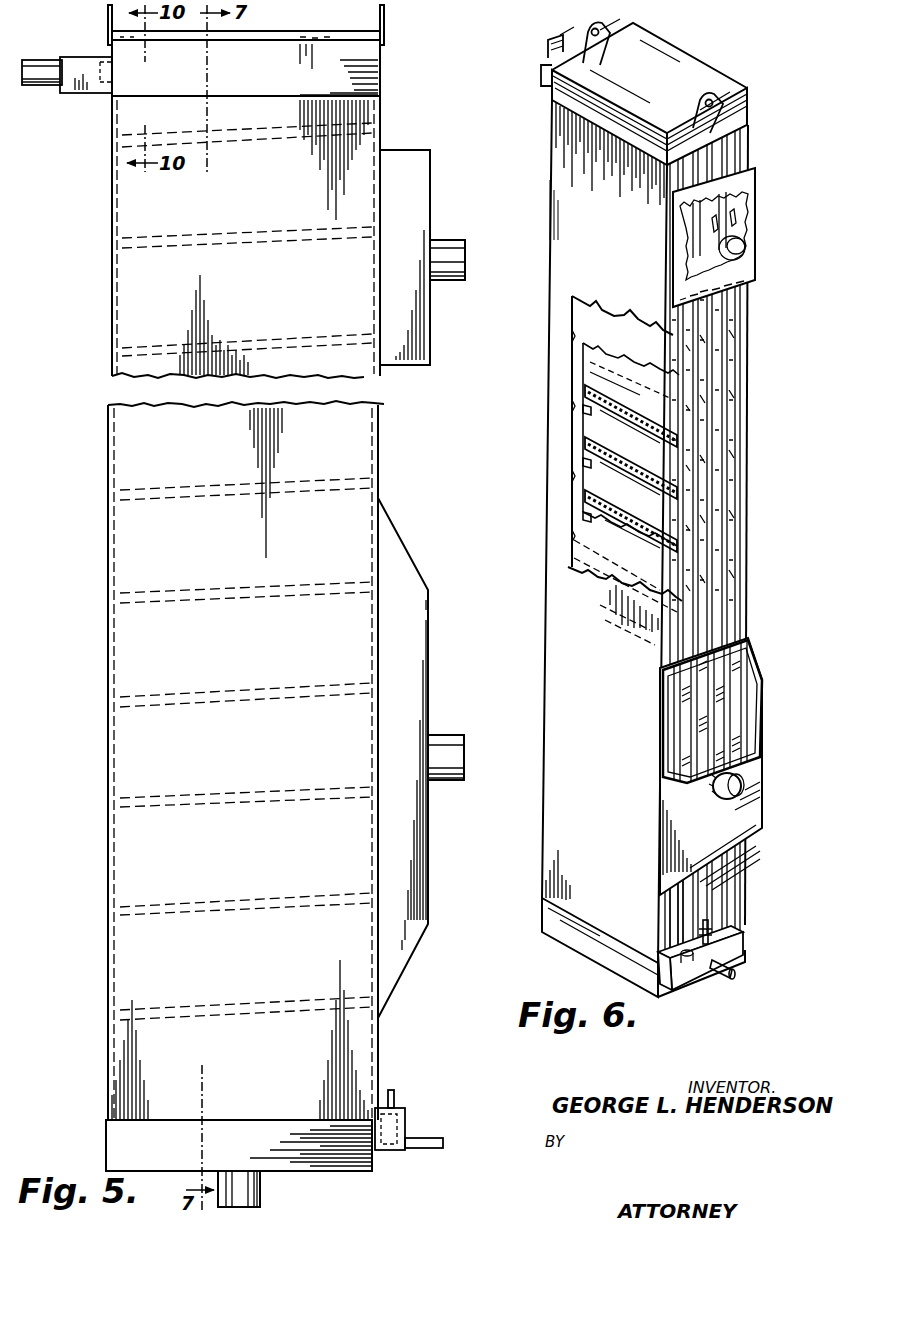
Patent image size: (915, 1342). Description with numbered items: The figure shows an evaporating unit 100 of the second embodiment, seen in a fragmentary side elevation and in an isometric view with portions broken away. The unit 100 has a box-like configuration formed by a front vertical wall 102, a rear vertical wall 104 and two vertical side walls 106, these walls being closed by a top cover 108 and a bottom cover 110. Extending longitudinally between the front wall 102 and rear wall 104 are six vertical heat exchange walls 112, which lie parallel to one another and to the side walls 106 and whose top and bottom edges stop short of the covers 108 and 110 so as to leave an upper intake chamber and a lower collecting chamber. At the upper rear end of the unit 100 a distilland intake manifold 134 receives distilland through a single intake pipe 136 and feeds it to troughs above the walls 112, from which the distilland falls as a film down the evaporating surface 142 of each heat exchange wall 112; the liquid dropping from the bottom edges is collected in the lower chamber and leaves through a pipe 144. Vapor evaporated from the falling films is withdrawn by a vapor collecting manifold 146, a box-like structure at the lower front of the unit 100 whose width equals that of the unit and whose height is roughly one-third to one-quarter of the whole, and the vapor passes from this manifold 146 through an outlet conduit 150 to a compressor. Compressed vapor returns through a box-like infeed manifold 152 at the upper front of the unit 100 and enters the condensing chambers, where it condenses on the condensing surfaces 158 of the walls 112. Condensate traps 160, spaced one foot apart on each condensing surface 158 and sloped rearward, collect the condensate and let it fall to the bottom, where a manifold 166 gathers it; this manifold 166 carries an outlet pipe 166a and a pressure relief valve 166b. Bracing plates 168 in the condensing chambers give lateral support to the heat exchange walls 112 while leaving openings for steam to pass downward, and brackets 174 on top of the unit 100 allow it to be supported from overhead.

In FIG. 5, the evaporating unit 100 is at (390, 452).
In FIG. 6, the evaporating unit 100 is at (756, 490).
In FIG. 5, the front vertical wall 102 is at (380, 414).
In FIG. 5, the rear vertical wall 104 is at (108, 468).
In FIG. 5, the vertical side wall 106 is at (236, 552).
In FIG. 6, the vertical side wall 106 is at (607, 717).
In FIG. 5, the top cover 108 is at (313, 38).
In FIG. 6, the top cover 108 is at (670, 63).
In FIG. 5, the bottom cover 110 is at (358, 1172).
In FIG. 6, the bottom cover 110 is at (668, 985).
In FIG. 6, the heat exchange wall 112 is at (722, 432).
In FIG. 5, the distilland intake manifold 134 is at (75, 95).
In FIG. 6, the distilland intake manifold 134 is at (541, 76).
In FIG. 5, the intake pipe 136 is at (37, 67).
In FIG. 6, the intake pipe 136 is at (548, 45).
In FIG. 6, the evaporating surface 142 is at (584, 323).
In FIG. 5, the pipe 144 is at (261, 1185).
In FIG. 5, the vapor collecting manifold 146 is at (430, 638).
In FIG. 6, the vapor collecting manifold 146 is at (752, 758).
In FIG. 5, the outlet conduit 150 is at (457, 738).
In FIG. 6, the outlet conduit 150 is at (738, 781).
In FIG. 5, the infeed manifold 152 is at (434, 178).
In FIG. 6, the infeed manifold 152 is at (755, 232).
In FIG. 6, the condensing surface 158 is at (585, 378).
In FIG. 5, the condensate trap 160 is at (256, 140).
In FIG. 6, the condensate trap 160 is at (600, 409).
In FIG. 5, the manifold 166 is at (408, 1112).
In FIG. 6, the manifold 166 is at (740, 933).
In FIG. 5, the outlet pipe 166a is at (444, 1141).
In FIG. 6, the outlet pipe 166a is at (738, 960).
In FIG. 5, the pressure relief valve 166b is at (395, 1098).
In FIG. 6, the pressure relief valve 166b is at (715, 912).
In FIG. 6, the bracing plate 168 is at (588, 516).
In FIG. 6, the bracket 174 is at (622, 40).